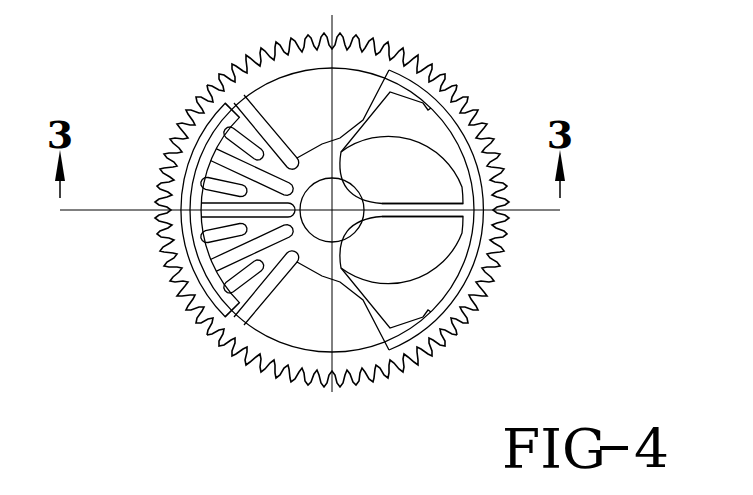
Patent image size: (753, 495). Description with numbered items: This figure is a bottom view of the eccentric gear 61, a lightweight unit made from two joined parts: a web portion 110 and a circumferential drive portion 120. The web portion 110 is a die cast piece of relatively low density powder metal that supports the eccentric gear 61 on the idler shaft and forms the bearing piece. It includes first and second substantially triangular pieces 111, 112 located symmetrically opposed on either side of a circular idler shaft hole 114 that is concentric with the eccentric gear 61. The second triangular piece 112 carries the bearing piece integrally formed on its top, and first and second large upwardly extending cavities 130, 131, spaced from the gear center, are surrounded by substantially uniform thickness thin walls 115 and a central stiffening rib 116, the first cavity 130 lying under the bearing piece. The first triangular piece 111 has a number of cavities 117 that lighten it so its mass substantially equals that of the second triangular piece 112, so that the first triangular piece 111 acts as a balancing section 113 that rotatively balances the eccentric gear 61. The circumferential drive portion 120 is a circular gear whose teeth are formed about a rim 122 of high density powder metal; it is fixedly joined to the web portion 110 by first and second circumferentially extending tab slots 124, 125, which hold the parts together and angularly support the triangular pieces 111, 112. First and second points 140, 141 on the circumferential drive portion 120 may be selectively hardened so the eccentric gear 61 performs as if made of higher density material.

The eccentric gear 61 is at (341, 237).
The web portion 110 is at (337, 142).
The first triangular piece 111 is at (250, 320).
The second triangular piece 112 is at (380, 313).
The balancing section 113 is at (186, 260).
The idler shaft hole 114 is at (324, 236).
The thin walls 115 is at (255, 117).
The central stiffening rib 116 is at (418, 214).
The cavities 117 is at (215, 176).
The circumferential drive portion 120 is at (498, 254).
The rim 122 is at (283, 63).
The first circumferentially extending tab slot 124 is at (438, 102).
The second circumferentially extending tab slot 125 is at (232, 318).
The first cavity 130 is at (386, 184).
The second cavity 131 is at (216, 225).
The first point 140 is at (336, 56).
The second point 141 is at (332, 364).